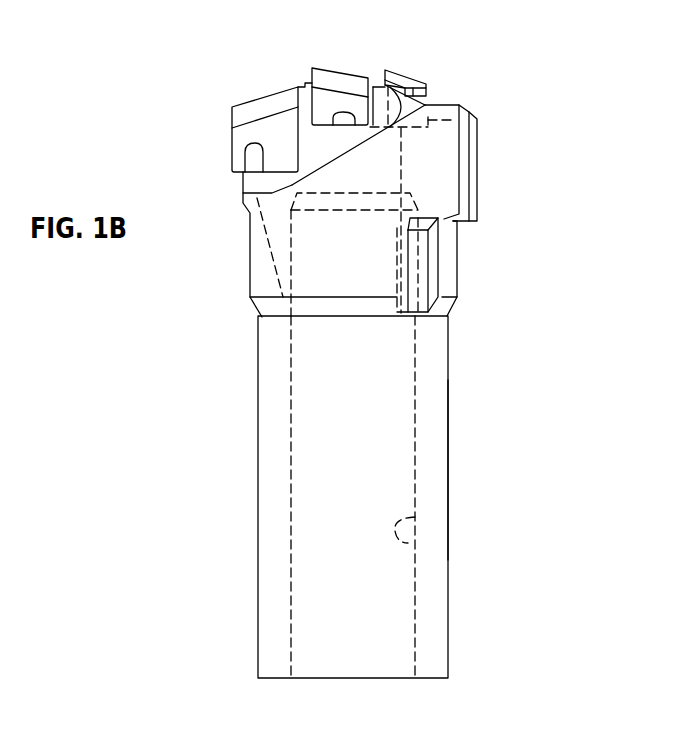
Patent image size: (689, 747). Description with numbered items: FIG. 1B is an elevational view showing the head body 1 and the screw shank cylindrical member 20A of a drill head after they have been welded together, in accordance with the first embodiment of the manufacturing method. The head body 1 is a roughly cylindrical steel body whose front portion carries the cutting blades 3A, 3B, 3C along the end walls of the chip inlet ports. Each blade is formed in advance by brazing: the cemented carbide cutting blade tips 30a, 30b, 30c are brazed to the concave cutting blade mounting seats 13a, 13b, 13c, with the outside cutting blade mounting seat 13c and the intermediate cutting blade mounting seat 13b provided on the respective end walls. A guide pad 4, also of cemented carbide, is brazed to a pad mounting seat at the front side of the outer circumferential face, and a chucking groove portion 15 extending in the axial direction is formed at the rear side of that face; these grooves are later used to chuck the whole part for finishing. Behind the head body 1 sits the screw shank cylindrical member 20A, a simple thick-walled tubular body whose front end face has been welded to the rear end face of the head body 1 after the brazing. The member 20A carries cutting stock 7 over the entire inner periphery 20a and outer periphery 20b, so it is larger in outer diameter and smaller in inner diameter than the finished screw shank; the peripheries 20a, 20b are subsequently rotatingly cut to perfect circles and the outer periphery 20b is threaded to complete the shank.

The head body 1 is at (245, 230).
The cutting blade 3A is at (333, 68).
The cutting blade 3B is at (414, 70).
The cutting blade 3C is at (258, 100).
The cutting blade tip 30a is at (328, 103).
The cutting blade tip 30b is at (428, 88).
The cutting blade tip 30c is at (240, 130).
The cutting blade mounting seat 13a is at (360, 126).
The intermediate cutting blade mounting seat 13b is at (462, 110).
The outside cutting blade mounting seat 13c is at (240, 143).
The guide pad 4 is at (480, 172).
The chucking groove portion 15 is at (420, 262).
The screw shank cylindrical member 20A is at (451, 437).
The inner periphery 20a is at (448, 490).
The outer periphery 20b is at (407, 542).
The cutting stock 7 is at (440, 608).